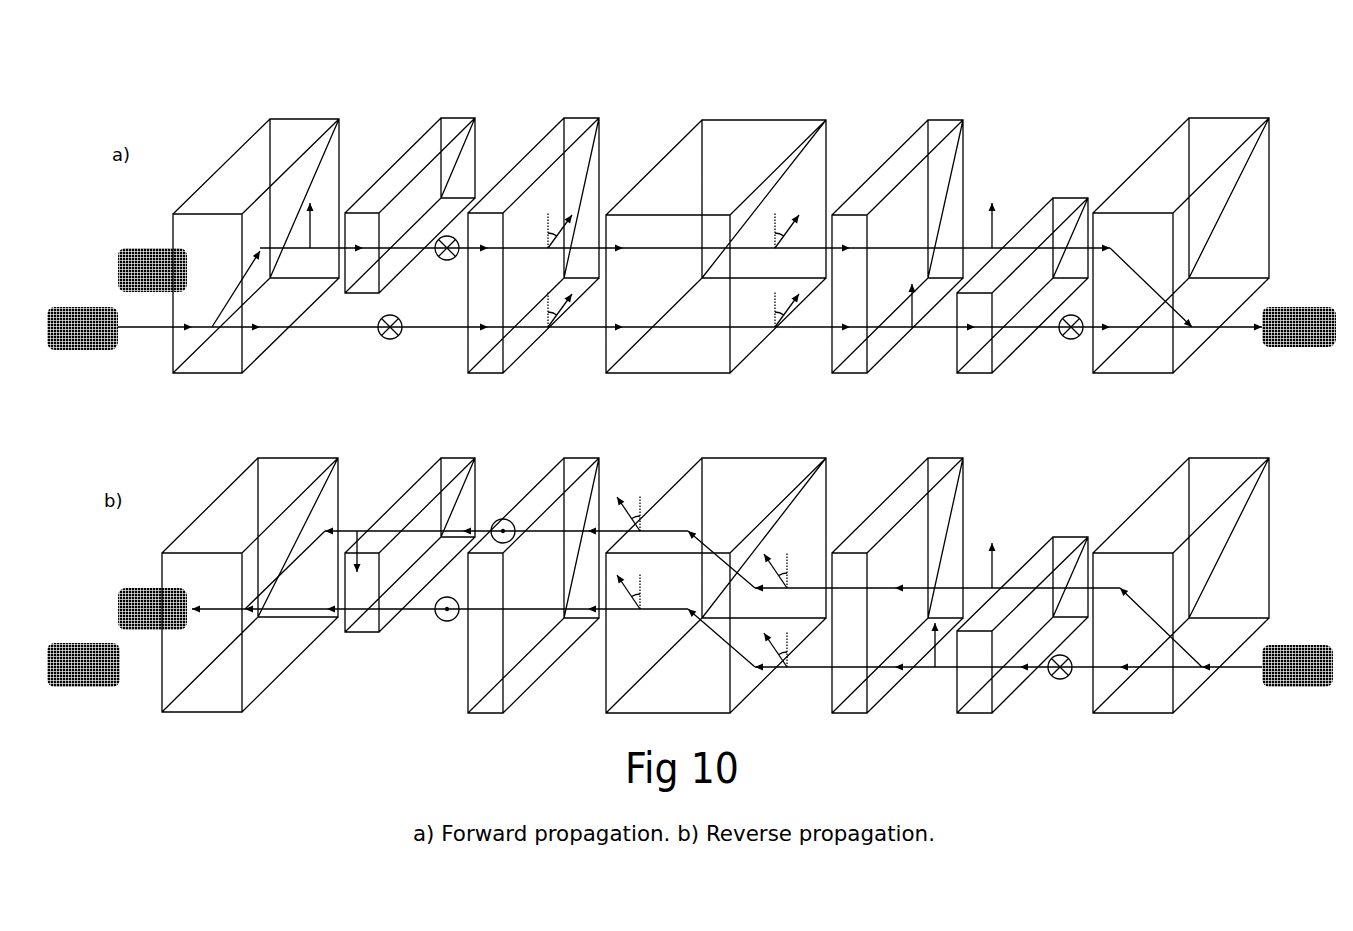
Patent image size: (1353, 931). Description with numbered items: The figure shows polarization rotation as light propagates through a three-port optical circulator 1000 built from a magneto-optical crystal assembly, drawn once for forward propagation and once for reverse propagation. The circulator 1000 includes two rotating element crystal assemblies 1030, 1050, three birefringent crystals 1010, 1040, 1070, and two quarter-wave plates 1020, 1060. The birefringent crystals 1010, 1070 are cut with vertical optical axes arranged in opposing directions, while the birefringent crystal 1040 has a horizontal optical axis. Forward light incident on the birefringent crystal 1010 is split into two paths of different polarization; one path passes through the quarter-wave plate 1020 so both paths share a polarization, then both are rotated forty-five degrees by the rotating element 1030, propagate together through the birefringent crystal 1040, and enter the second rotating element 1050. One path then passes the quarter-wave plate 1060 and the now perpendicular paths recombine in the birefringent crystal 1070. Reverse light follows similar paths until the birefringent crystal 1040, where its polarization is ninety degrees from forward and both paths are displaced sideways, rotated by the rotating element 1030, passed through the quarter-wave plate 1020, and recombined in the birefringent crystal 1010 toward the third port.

The optical isolator / circulator system 1000 is at (176, 88).
The first birefringent crystal 1010 is at (275, 123).
The first quarter-wave plate 1020 is at (447, 120).
The first rotating element crystal assembly 1030 is at (572, 121).
The third birefringent crystal 1040 is at (731, 123).
The second rotating element crystal assembly 1050 is at (935, 123).
The second quarter-wave plate 1060 is at (1025, 226).
The second birefringent crystal 1070 is at (1208, 122).